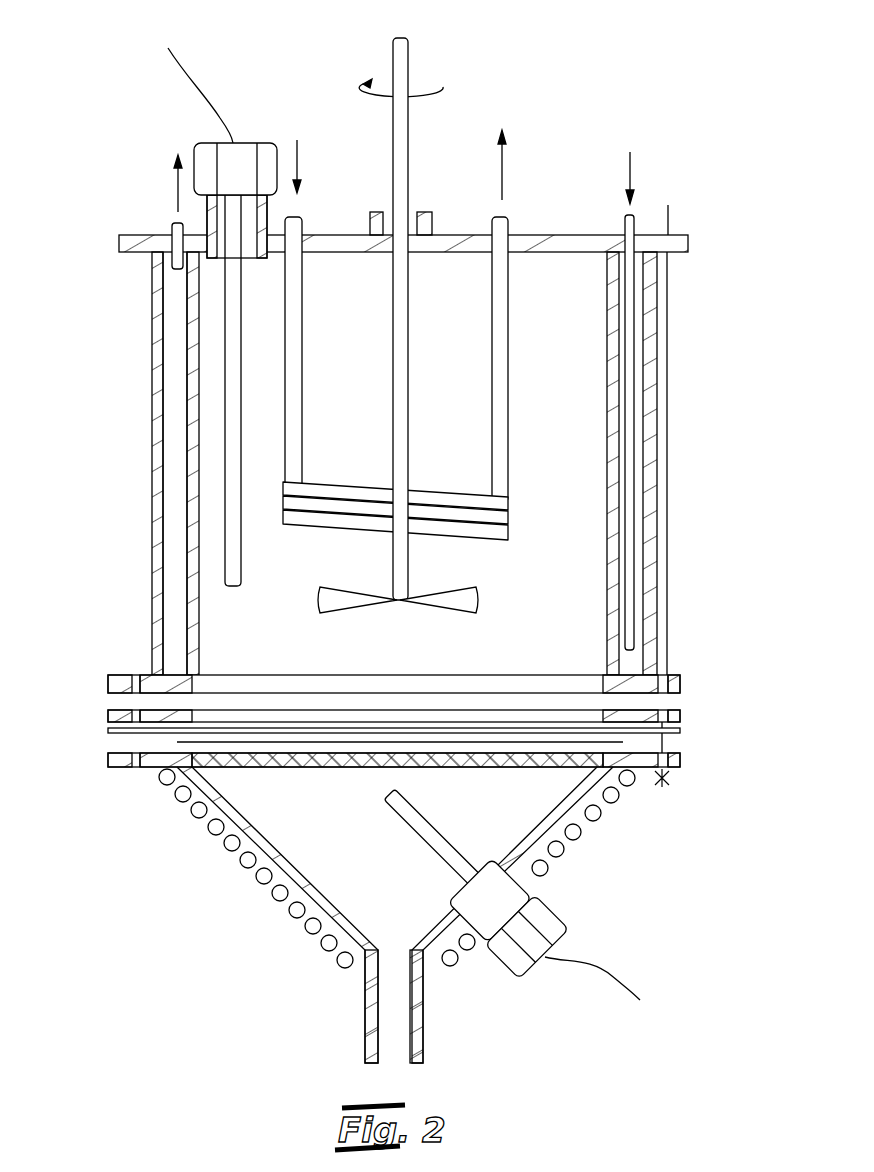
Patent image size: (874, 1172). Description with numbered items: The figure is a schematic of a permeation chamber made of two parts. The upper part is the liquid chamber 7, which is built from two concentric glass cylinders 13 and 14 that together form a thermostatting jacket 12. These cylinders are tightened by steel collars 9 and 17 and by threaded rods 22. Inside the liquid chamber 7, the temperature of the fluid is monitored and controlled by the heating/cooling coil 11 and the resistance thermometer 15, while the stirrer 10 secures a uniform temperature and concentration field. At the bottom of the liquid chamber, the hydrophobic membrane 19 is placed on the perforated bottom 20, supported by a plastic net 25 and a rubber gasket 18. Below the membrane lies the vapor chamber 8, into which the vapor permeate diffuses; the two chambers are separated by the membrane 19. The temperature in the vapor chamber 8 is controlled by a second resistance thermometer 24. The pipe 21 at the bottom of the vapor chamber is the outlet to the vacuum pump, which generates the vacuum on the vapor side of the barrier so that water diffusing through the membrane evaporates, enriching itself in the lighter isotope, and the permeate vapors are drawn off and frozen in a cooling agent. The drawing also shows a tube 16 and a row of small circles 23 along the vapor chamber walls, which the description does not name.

The liquid chamber 7 is at (243, 627).
The vapor chamber 8 is at (395, 915).
The steel collar 9 is at (152, 235).
The stirrer 10 is at (410, 142).
The heating/cooling coil 11 is at (510, 215).
The thermostatting jacket 12 is at (168, 590).
The glass cylinder 13 is at (152, 549).
The glass cylinder 14 is at (187, 618).
The resistance thermometer 15 is at (247, 143).
The gas outlet tube 16 is at (558, 250).
The steel collar 17 is at (680, 674).
The rubber gasket 18 is at (680, 715).
The membrane 19 is at (680, 730).
The perforated bottom 20 is at (680, 762).
The pipe 21 is at (365, 1000).
The threaded rods 22 is at (667, 383).
The cooling coil 23 is at (598, 815).
The resistance thermometer 24 is at (505, 907).
The plastic net 25 is at (177, 742).